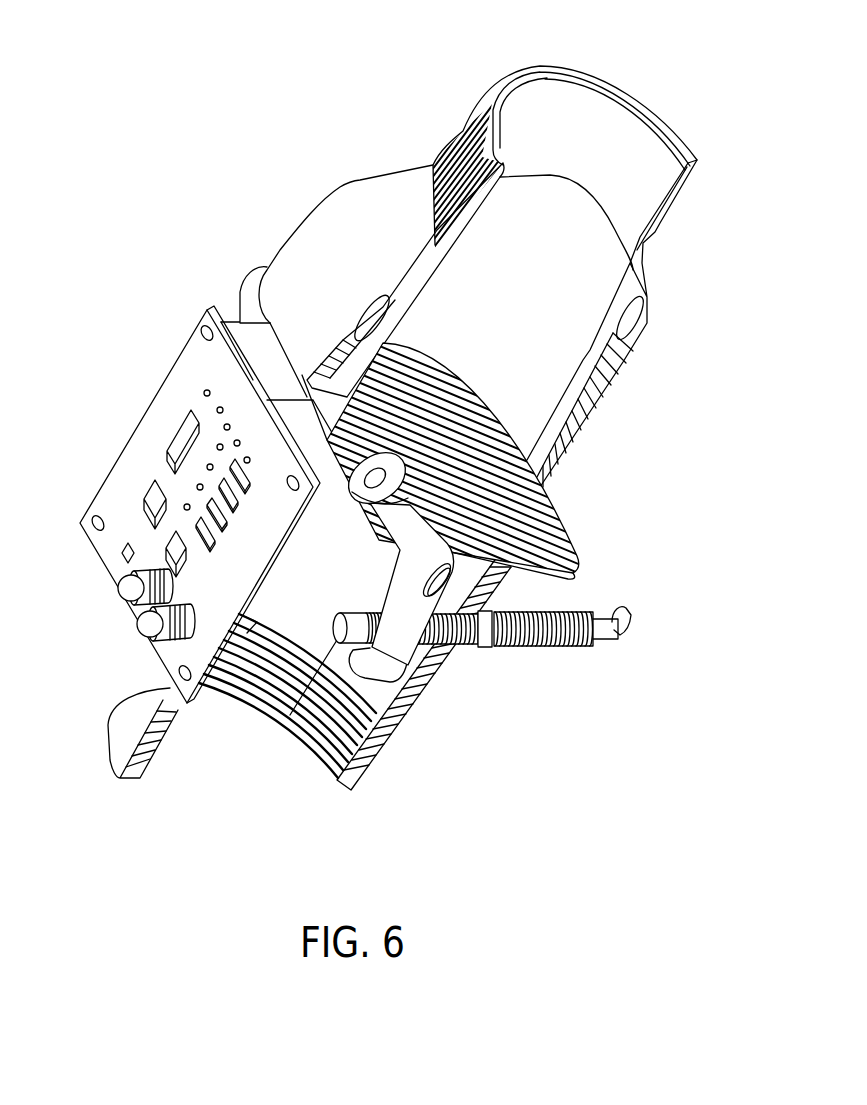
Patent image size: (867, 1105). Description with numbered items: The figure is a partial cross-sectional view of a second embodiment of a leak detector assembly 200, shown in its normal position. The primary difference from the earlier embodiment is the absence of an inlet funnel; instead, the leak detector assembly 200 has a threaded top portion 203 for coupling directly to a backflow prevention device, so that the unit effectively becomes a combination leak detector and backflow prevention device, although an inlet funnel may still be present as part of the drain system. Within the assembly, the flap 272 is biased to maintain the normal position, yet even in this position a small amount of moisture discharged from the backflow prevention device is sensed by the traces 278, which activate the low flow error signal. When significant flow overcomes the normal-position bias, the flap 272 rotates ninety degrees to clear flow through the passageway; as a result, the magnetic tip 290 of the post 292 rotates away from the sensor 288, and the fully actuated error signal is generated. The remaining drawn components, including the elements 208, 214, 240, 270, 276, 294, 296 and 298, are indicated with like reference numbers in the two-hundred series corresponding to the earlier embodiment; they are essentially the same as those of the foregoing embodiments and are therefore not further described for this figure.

The leak detector assembly 200 is at (100, 87).
The threaded top portion 203 is at (573, 98).
The housing base tab 208 is at (118, 736).
The flexible ribbon cable 214 is at (247, 684).
The printed circuit board 240 is at (135, 447).
The drive mechanism 270 is at (552, 496).
The flap 272 is at (565, 522).
The lever arm 276 is at (455, 566).
The traces 278 is at (575, 560).
The sensor 288 is at (554, 649).
The magnetic tip 290 is at (480, 650).
The post 292 is at (448, 648).
The pin 294 is at (400, 655).
The hook 296 is at (634, 620).
The cable bend 298 is at (292, 714).